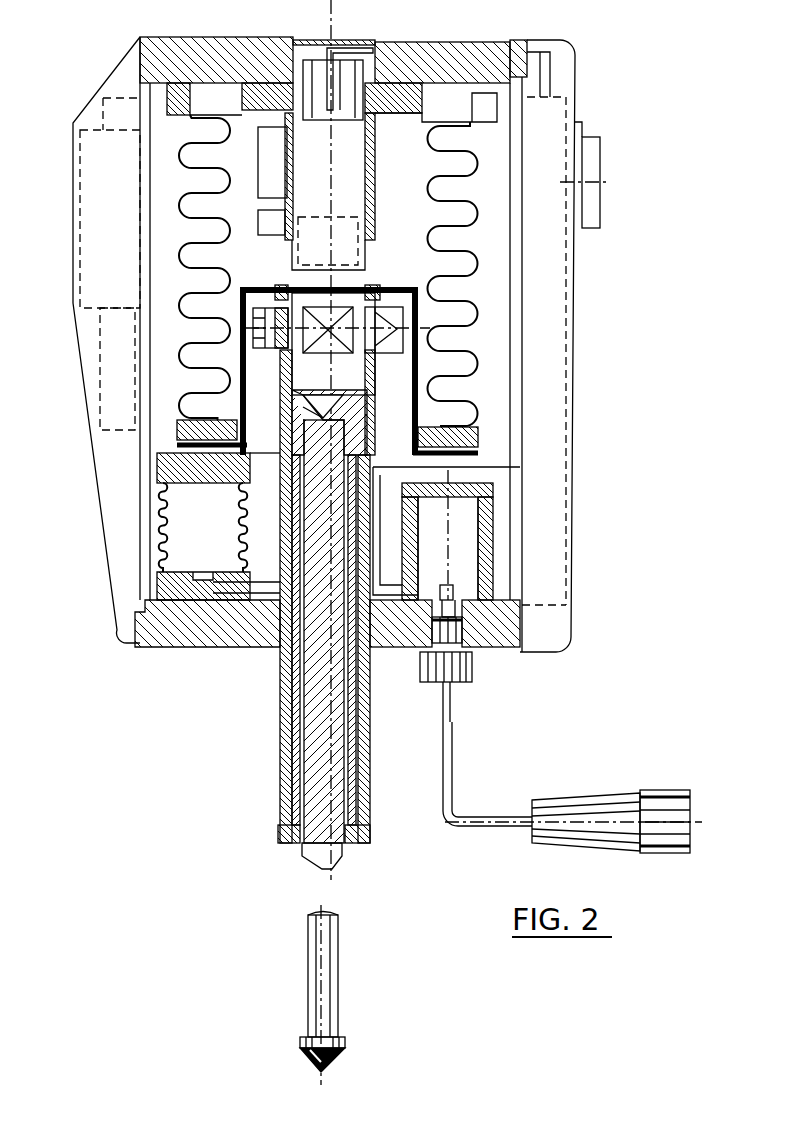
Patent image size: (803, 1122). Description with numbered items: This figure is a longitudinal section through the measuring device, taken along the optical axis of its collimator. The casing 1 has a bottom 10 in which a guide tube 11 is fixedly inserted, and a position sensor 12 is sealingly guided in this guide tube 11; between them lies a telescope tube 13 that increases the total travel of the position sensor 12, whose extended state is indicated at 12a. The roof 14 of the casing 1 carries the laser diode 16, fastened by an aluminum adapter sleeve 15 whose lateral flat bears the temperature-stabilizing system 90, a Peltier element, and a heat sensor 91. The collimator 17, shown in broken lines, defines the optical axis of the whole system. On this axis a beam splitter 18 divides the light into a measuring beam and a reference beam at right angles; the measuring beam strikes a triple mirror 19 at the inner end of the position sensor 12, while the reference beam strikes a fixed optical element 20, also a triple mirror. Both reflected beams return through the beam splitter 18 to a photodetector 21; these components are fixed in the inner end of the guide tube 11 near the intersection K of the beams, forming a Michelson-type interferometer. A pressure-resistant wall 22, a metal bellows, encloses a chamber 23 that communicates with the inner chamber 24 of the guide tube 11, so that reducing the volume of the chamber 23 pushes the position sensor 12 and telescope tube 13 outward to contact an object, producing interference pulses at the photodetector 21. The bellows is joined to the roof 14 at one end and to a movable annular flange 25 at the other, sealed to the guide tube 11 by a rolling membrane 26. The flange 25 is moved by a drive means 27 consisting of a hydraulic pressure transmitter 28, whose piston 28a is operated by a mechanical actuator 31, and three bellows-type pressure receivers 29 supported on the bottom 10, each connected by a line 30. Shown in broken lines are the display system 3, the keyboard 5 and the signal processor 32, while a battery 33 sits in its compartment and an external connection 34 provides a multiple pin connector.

The casing 1 is at (582, 384).
The display system 3 is at (95, 225).
The keyboard 5 is at (118, 348).
The bottom 10 is at (198, 644).
The guide tube 11 is at (280, 707).
The position sensor 12 is at (307, 858).
The extended state of position sensor 12a is at (334, 978).
The telescope tube 13 is at (298, 760).
The roof 14 is at (152, 62).
The adapter sleeve 15 is at (373, 143).
The laser diode 16 is at (355, 190).
The collimator 17 is at (347, 250).
The beam splitter 18 is at (310, 342).
The mirror 19 is at (303, 407).
The fixed optical element 20 is at (417, 324).
The photodetector 21 is at (276, 335).
The pressure-resistant wall 22 is at (483, 265).
The chamber 23 is at (182, 167).
The inner chamber 24 is at (352, 371).
The annular flange 25 is at (450, 449).
The rolling membrane 26 is at (462, 437).
The drive means 27 is at (147, 507).
The pressure transmitter 28 is at (487, 518).
The piston 28a is at (463, 577).
The pressure receiver 29 is at (185, 538).
The line 30 is at (193, 581).
The mechanical actuator 31 is at (668, 796).
The signal processor 32 is at (553, 587).
The battery 33 is at (557, 115).
The external connection 34 is at (597, 152).
The system for stabilizing the operating temperature 90 is at (262, 146).
The heat sensor 91 is at (262, 233).
The intersection of measuring and reference light beams K is at (329, 331).